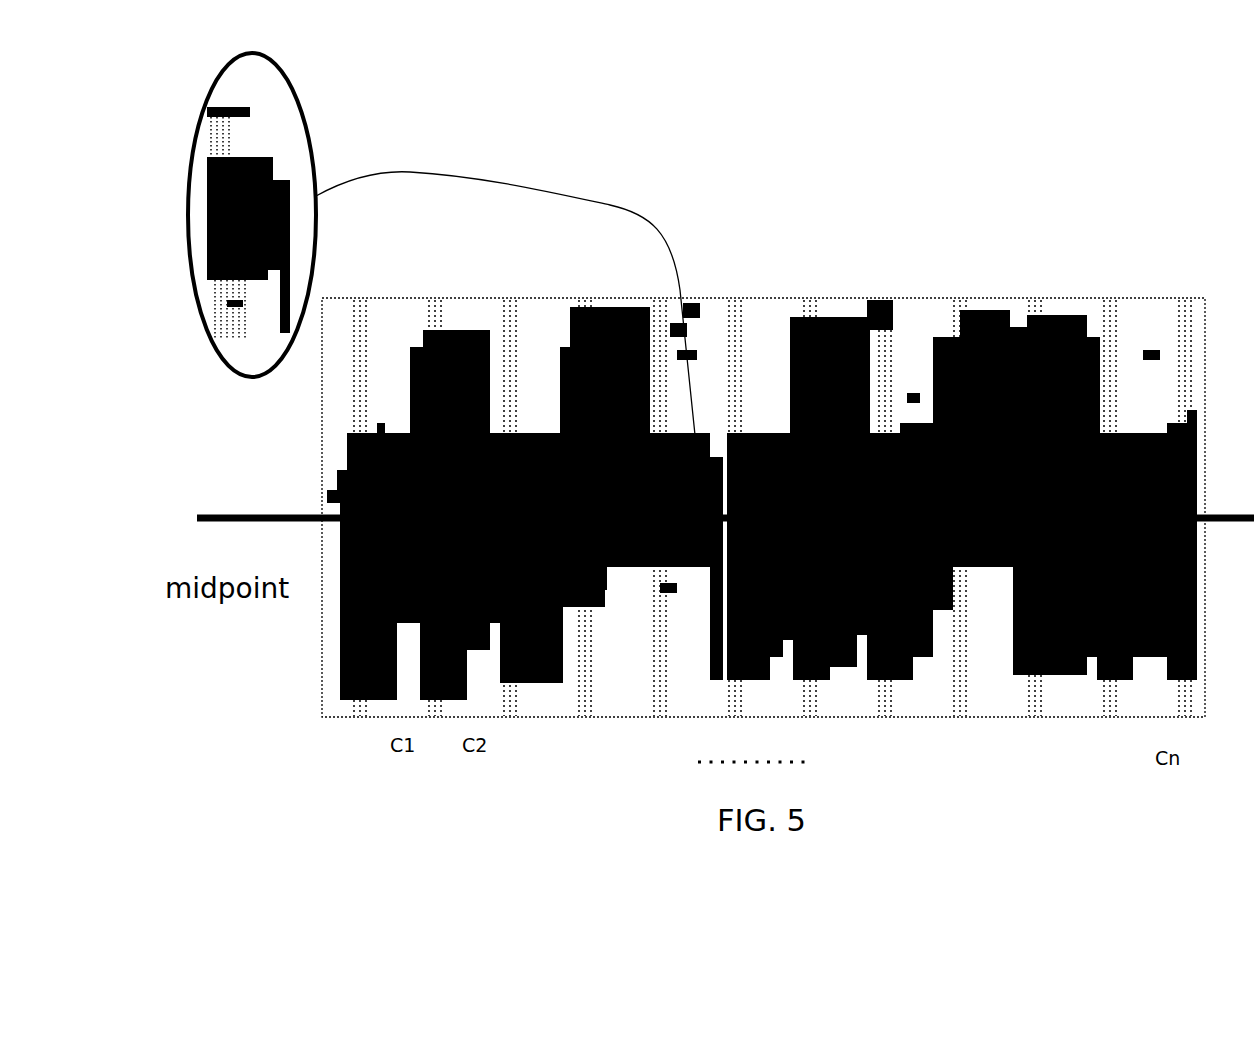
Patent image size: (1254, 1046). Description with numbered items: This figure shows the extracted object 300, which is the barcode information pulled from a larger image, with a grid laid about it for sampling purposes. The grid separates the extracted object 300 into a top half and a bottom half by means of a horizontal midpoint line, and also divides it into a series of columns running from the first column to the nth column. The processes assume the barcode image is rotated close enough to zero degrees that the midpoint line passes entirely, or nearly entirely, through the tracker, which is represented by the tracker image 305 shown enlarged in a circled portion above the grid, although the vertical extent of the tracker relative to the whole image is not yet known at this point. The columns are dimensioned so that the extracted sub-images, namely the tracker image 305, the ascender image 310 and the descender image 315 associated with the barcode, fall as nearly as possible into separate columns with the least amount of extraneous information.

The extracted object 300 is at (1017, 288).
The tracker image 305 is at (441, 244).
The ascender image 310 is at (1118, 325).
The descender image 315 is at (943, 627).